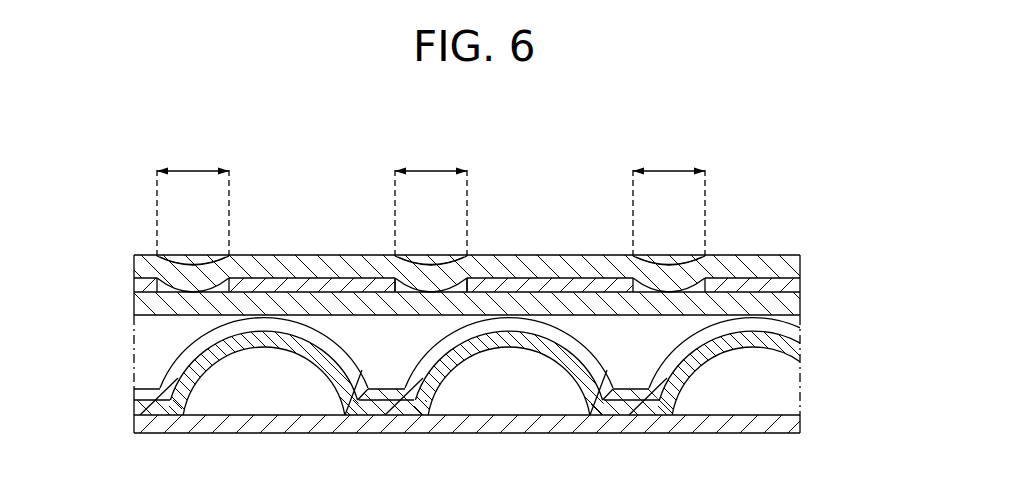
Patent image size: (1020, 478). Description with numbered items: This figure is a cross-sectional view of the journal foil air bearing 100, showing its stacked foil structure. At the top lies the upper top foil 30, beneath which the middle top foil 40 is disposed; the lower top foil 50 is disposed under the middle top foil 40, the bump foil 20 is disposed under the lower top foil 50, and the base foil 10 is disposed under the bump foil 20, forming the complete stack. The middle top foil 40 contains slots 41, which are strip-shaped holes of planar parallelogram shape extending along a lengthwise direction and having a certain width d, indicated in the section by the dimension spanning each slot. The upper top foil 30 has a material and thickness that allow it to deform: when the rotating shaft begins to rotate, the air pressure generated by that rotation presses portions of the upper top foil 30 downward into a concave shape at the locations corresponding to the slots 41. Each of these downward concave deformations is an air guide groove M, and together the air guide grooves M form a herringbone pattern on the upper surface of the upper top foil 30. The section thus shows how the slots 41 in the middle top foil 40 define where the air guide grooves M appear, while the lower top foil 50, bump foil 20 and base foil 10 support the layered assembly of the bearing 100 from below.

The journal foil air bearing 100 is at (122, 176).
The base foil 10 is at (800, 425).
The bump foil 20 is at (800, 350).
The upper top foil 30 is at (800, 257).
The middle top foil 40 is at (800, 285).
The slots 41 is at (397, 270).
The lower top foil 50 is at (800, 305).
The air guide grooves M is at (192, 258).
The width d is at (431, 198).